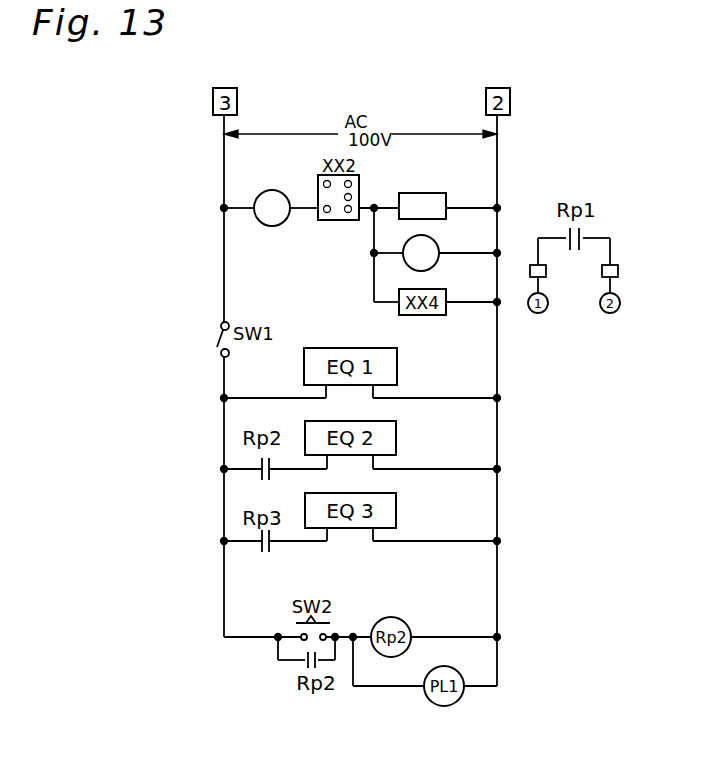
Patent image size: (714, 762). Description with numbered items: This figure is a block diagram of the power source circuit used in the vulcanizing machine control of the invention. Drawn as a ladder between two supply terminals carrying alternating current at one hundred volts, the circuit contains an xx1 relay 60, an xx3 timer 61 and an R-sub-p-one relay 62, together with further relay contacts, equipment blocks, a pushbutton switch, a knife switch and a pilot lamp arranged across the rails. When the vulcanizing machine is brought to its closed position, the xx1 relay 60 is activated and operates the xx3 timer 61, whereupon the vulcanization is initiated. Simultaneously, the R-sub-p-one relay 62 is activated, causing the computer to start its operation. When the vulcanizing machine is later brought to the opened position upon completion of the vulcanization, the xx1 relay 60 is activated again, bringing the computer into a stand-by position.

The xx1 relay 60 is at (258, 224).
The xx3 timer 61 is at (442, 193).
The Rp1 relay 62 is at (437, 263).